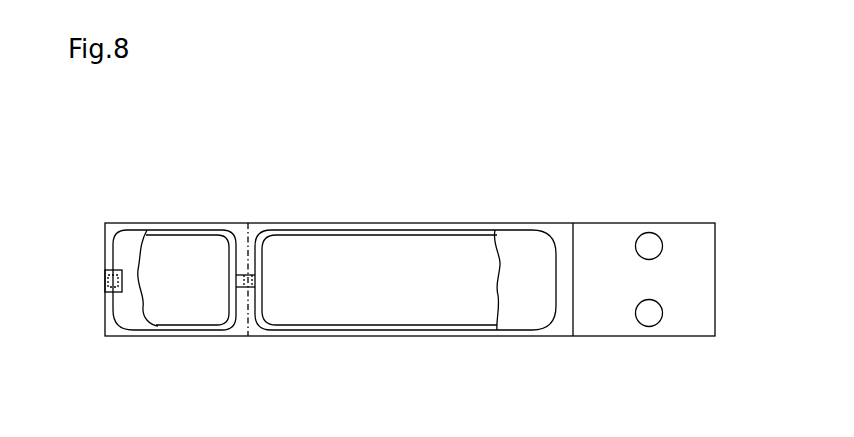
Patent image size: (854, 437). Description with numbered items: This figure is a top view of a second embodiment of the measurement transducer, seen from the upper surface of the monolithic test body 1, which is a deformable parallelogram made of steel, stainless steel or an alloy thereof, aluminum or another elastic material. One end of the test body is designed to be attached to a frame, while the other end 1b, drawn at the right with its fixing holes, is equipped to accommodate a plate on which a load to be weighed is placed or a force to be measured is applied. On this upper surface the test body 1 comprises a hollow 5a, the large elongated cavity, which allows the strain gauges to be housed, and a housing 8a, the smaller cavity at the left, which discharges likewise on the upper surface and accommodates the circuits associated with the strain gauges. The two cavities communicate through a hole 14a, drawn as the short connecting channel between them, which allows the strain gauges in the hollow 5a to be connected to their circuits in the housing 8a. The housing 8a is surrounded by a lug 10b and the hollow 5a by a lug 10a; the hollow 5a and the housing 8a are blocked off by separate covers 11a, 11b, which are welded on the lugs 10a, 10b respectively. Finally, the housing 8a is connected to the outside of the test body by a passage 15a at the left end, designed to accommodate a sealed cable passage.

The test body 1 is at (242, 330).
The end of the test body 1b is at (627, 233).
The hollow 5a is at (450, 292).
The housing 8a is at (185, 293).
The lug 10a is at (476, 229).
The lug 10b is at (233, 228).
The cover 11a is at (530, 319).
The cover 11b is at (136, 323).
The hole 14a is at (260, 282).
The passage 15a is at (110, 282).